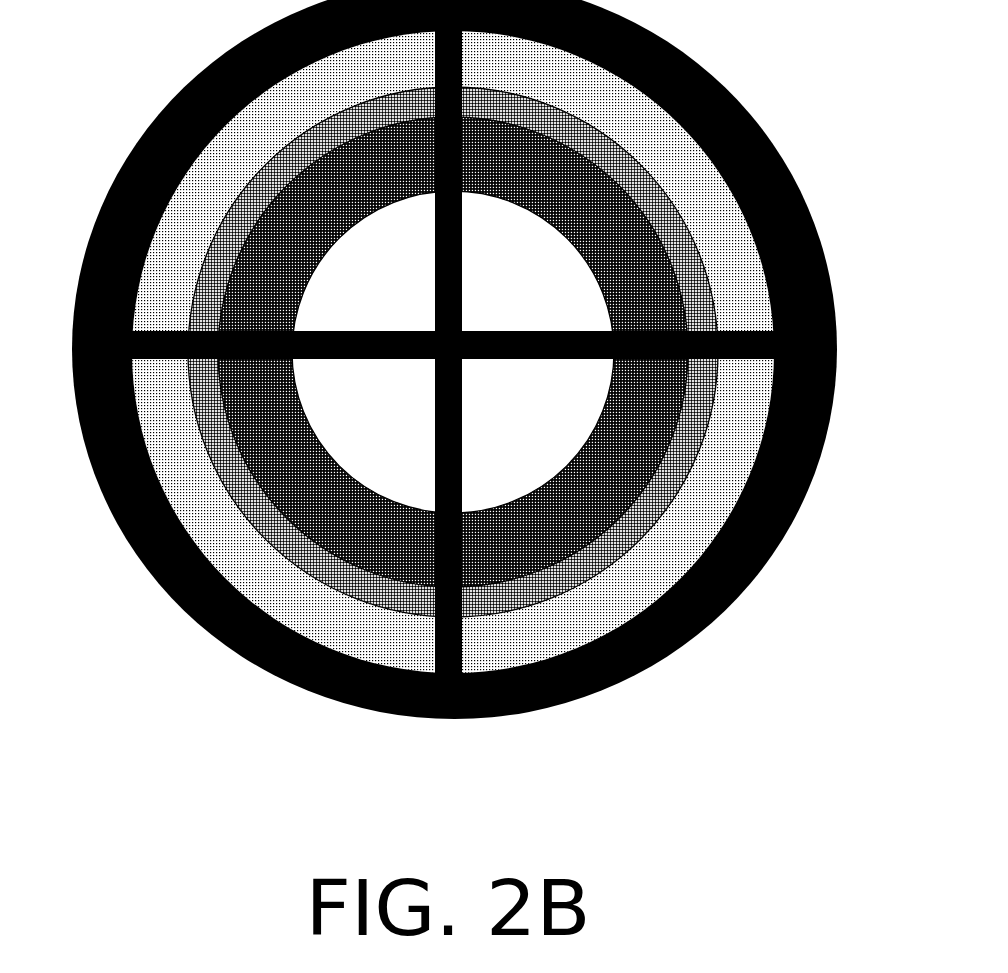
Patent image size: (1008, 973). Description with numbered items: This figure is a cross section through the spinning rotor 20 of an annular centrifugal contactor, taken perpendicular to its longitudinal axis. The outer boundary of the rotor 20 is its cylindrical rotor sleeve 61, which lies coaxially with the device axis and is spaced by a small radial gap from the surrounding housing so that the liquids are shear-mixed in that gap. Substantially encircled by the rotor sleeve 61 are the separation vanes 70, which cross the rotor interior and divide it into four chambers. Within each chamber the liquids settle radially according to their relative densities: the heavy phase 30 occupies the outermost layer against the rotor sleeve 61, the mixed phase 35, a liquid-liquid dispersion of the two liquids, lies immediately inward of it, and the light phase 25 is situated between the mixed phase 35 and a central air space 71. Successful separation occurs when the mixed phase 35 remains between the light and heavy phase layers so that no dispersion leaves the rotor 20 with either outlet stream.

The rotor 20 is at (135, 87).
The light phase liquid 25 is at (252, 397).
The heavy phase liquid 30 is at (168, 258).
The mixed phase 35 is at (700, 400).
The rotor sleeve 61 is at (730, 607).
The separation vanes 70 is at (493, 330).
The air space 71 is at (373, 423).